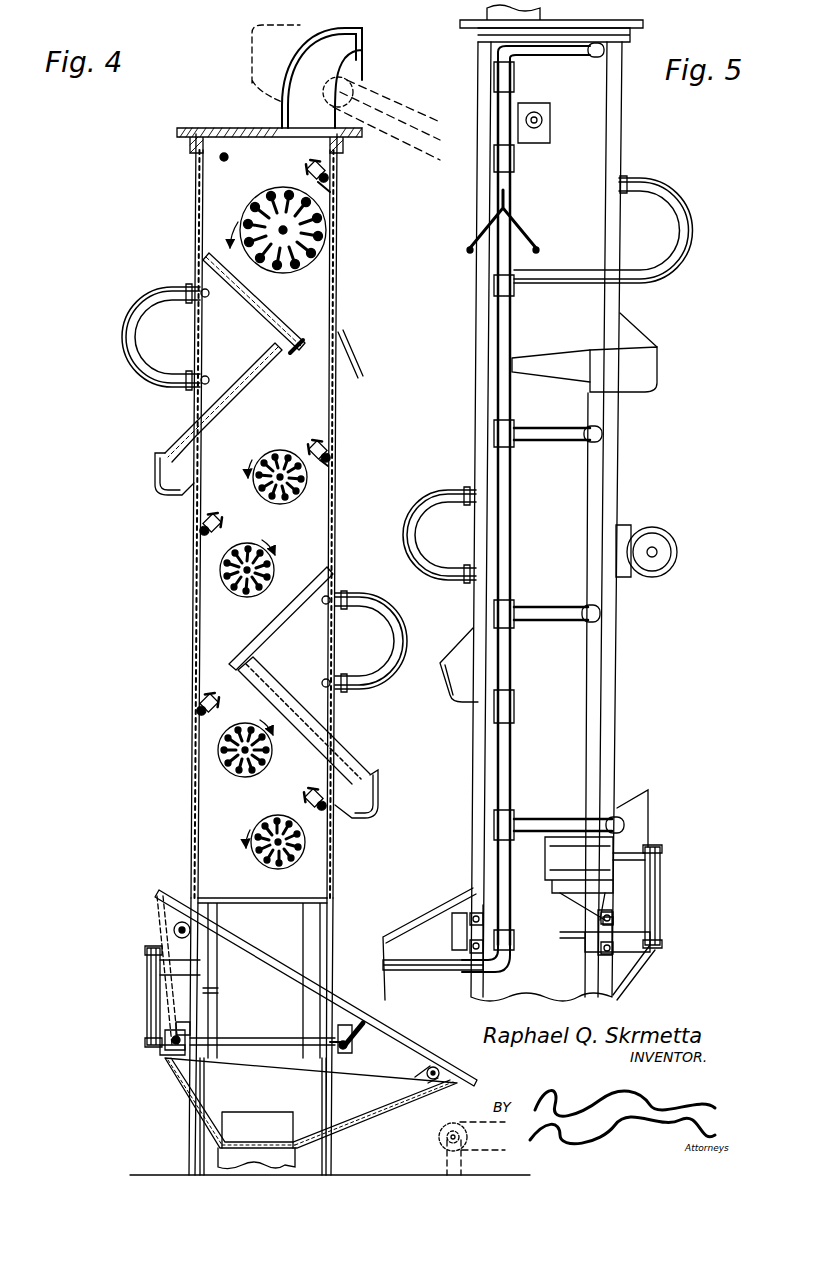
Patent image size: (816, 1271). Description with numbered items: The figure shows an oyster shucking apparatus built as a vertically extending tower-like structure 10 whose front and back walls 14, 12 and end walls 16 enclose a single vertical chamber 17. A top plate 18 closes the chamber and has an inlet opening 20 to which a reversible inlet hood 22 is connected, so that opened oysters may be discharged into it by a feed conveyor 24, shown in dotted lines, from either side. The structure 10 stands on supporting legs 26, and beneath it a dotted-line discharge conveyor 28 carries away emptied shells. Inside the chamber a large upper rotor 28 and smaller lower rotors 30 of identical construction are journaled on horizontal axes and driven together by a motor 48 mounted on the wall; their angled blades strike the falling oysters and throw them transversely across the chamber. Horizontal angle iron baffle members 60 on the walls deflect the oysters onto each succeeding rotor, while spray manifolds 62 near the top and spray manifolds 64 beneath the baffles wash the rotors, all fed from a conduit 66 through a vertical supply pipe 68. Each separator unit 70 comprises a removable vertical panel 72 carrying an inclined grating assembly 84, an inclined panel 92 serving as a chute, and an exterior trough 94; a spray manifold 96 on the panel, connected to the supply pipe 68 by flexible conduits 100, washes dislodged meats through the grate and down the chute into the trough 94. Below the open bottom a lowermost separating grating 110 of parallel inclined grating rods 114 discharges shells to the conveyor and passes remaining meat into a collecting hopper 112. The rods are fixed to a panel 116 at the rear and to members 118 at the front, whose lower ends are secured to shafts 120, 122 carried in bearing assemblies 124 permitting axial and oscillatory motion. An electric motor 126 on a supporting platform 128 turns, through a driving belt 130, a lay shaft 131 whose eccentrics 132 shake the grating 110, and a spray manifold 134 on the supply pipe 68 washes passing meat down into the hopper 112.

In FIG. 4, the tower-like structure 10 is at (347, 279).
In FIG. 5, the tower-like structure 10 is at (626, 136).
In FIG. 4, the back wall 12 is at (194, 617).
In FIG. 4, the front wall 14 is at (336, 522).
In FIG. 4, the end walls 16 is at (222, 197).
In FIG. 5, the end walls 16 is at (582, 766).
In FIG. 4, the vertically extending chamber 17 is at (285, 407).
In FIG. 4, the top plate 18 is at (215, 128).
In FIG. 5, the top plate 18 is at (630, 40).
In FIG. 4, the inlet opening 20 is at (296, 134).
In FIG. 4, the inlet hood 22 is at (286, 28).
In FIG. 5, the inlet hood 22 is at (487, 19).
In FIG. 4, the feed conveyor 24 is at (392, 102).
In FIG. 4, the supporting legs 26 is at (330, 1167).
In FIG. 4, the upper rotor 28 is at (257, 188).
In FIG. 4, the lower rotors 30 is at (262, 454).
In FIG. 5, the motor 48 is at (660, 545).
In FIG. 4, the baffle members 60 is at (318, 165).
In FIG. 4, the spray manifolds 62 is at (220, 160).
In FIG. 4, the spray manifolds 64 is at (330, 195).
In FIG. 5, the conduit 66 is at (450, 970).
In FIG. 5, the vertical supply pipe 68 is at (506, 533).
In FIG. 4, the separator unit 70 is at (284, 313).
In FIG. 4, the vertical panel 72 is at (205, 385).
In FIG. 4, the grating assembly 84 is at (245, 301).
In FIG. 4, the inclined panel 92 is at (288, 361).
In FIG. 4, the trough 94 is at (172, 496).
In FIG. 5, the trough 94 is at (638, 336).
In FIG. 5, the spray manifold 96 is at (638, 376).
In FIG. 4, the flexible conduits 100 is at (126, 346).
In FIG. 5, the flexible conduits 100 is at (688, 272).
In FIG. 4, the lowermost separating grating 110 is at (262, 963).
In FIG. 5, the lowermost separating grating 110 is at (405, 920).
In FIG. 4, the collecting hopper 112 is at (345, 1127).
In FIG. 4, the grating rods 114 is at (246, 945).
In FIG. 4, the panel 116 is at (170, 1005).
In FIG. 4, the members 118 is at (350, 1018).
In FIG. 5, the members 118 is at (455, 915).
In FIG. 4, the shaft 120 is at (184, 1051).
In FIG. 4, the shaft 122 is at (340, 1052).
In FIG. 5, the shaft 122 is at (600, 937).
In FIG. 4, the bearing assemblies 124 is at (166, 1051).
In FIG. 5, the electric motor 126 is at (568, 840).
In FIG. 5, the supporting platform 128 is at (567, 894).
In FIG. 4, the driving belt 130 is at (147, 991).
In FIG. 5, the driving belt 130 is at (660, 886).
In FIG. 4, the lay shaft 131 is at (263, 1035).
In FIG. 5, the lay shaft 131 is at (510, 939).
In FIG. 4, the eccentrics 132 is at (190, 1028).
In FIG. 5, the eccentrics 132 is at (458, 936).
In FIG. 4, the spray manifold 134 is at (433, 1066).